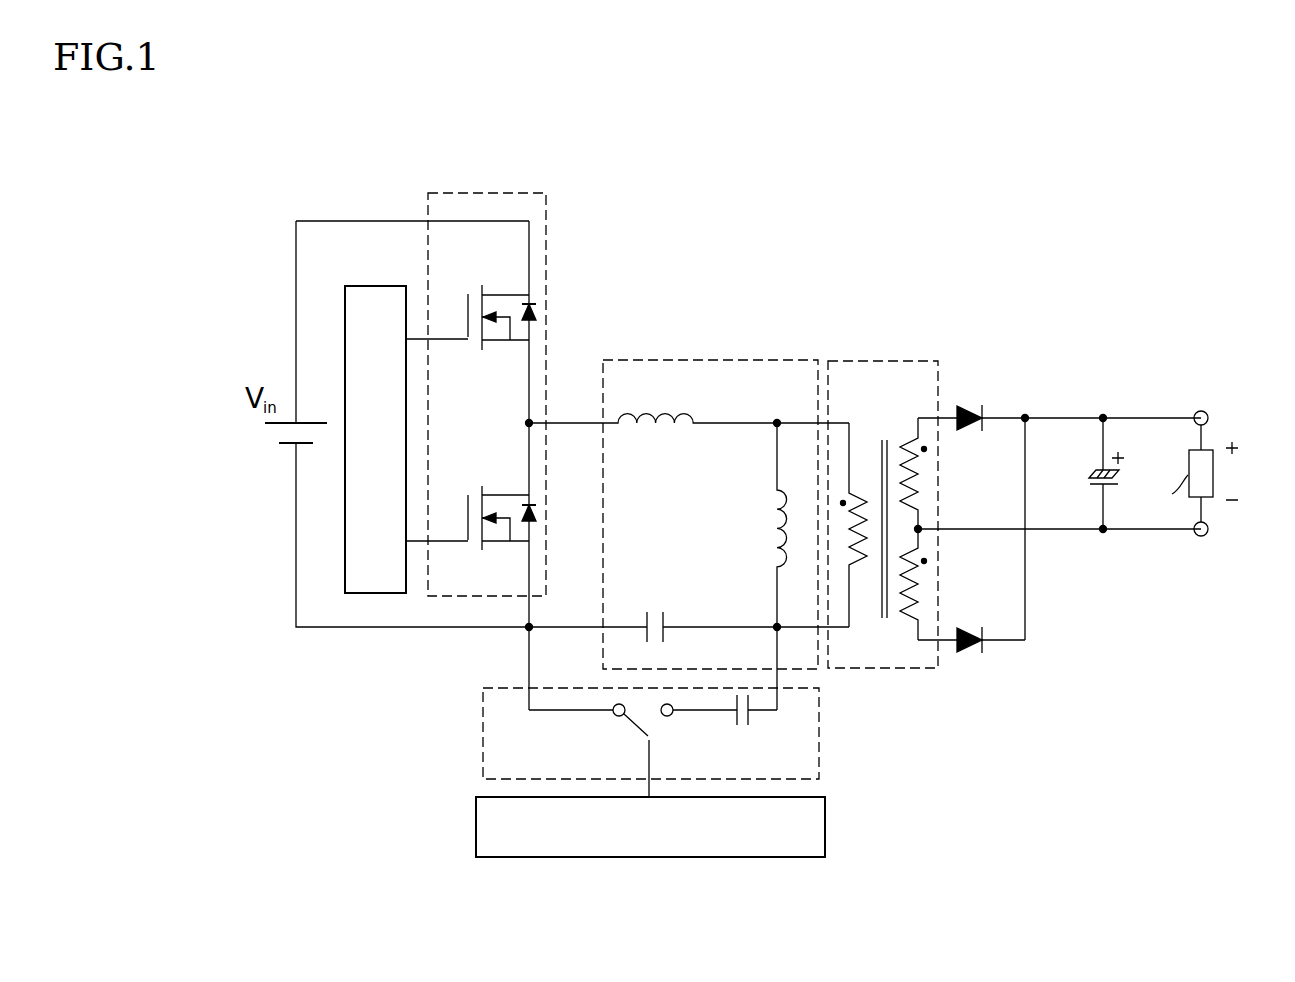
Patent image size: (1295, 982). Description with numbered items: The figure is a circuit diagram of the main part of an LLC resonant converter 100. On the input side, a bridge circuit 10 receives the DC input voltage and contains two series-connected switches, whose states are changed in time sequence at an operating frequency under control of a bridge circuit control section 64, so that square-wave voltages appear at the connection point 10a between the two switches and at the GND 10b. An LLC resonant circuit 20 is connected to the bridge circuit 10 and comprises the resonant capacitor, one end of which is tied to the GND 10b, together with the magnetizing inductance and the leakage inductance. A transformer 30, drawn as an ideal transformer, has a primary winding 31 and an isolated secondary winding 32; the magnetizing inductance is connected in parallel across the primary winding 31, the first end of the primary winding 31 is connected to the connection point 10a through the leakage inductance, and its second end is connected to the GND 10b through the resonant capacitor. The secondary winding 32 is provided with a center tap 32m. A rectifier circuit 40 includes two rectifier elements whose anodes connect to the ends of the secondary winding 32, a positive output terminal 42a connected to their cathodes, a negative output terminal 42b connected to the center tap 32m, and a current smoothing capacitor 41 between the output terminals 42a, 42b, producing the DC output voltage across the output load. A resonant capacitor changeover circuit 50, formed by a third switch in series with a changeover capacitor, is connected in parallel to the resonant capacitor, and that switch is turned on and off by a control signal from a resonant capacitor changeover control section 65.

The LLC resonant converter 100 is at (248, 152).
The bridge circuit 10 is at (513, 192).
The connection point 10a is at (527, 421).
The GND 10b is at (527, 628).
The LLC resonant circuit 20 is at (760, 360).
The transformer 30 is at (914, 503).
The primary winding 31 is at (849, 622).
The secondary winding 32 is at (918, 642).
The center tap 32m is at (920, 528).
The rectifier circuit 40 is at (1099, 461).
The current smoothing capacitor 41 is at (1097, 482).
The positive output terminal 42a is at (1208, 414).
The negative output terminal 42b is at (1201, 537).
The resonant capacitor changeover circuit 50 is at (820, 757).
The bridge circuit control section 64 is at (366, 286).
The resonant capacitor changeover control section 65 is at (474, 832).